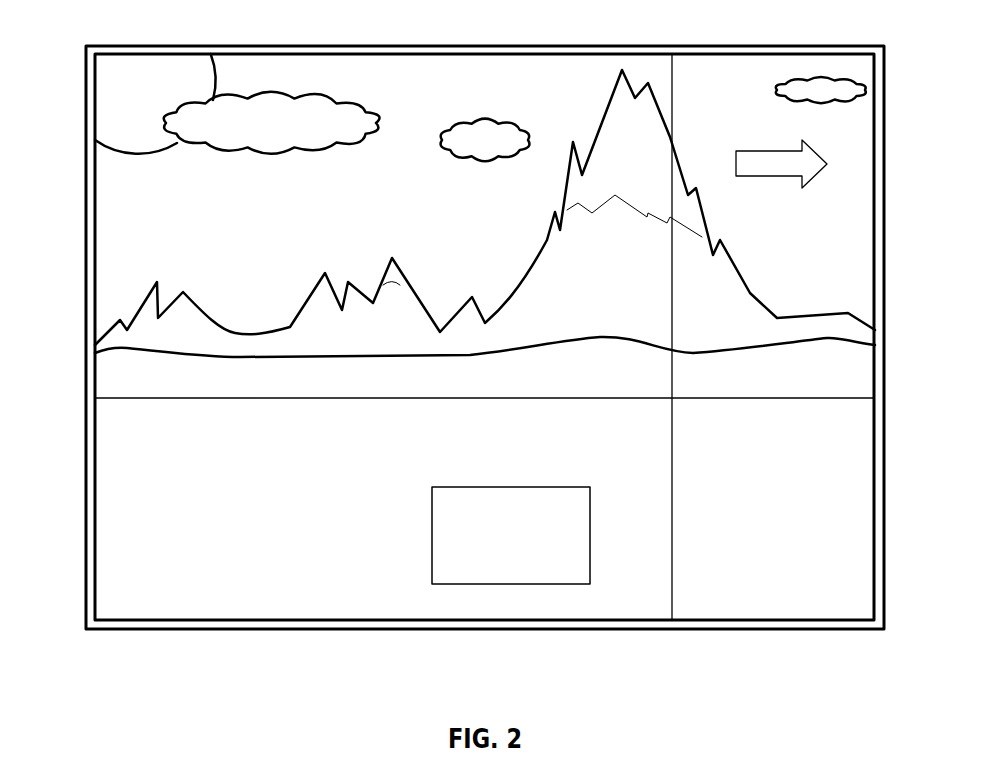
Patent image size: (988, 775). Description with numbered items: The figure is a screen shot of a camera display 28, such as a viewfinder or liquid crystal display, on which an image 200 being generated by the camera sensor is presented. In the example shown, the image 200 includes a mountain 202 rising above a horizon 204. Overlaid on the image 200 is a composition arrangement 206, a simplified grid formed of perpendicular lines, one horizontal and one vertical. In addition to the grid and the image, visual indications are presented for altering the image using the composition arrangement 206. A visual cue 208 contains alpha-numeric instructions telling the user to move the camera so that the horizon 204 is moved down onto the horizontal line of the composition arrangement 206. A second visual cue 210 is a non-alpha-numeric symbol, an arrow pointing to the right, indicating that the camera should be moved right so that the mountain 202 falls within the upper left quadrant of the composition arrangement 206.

The display 28 is at (885, 110).
The image 200 is at (175, 218).
The mountain 202 is at (600, 130).
The horizon 204 is at (287, 357).
The composition arrangement 206 is at (528, 399).
The visual cue 208 is at (432, 535).
The visual cue 210 is at (772, 177).